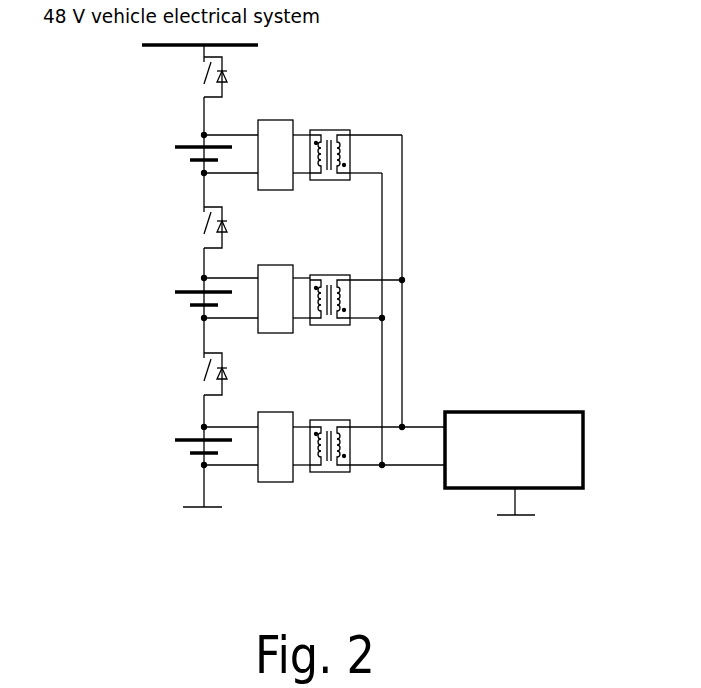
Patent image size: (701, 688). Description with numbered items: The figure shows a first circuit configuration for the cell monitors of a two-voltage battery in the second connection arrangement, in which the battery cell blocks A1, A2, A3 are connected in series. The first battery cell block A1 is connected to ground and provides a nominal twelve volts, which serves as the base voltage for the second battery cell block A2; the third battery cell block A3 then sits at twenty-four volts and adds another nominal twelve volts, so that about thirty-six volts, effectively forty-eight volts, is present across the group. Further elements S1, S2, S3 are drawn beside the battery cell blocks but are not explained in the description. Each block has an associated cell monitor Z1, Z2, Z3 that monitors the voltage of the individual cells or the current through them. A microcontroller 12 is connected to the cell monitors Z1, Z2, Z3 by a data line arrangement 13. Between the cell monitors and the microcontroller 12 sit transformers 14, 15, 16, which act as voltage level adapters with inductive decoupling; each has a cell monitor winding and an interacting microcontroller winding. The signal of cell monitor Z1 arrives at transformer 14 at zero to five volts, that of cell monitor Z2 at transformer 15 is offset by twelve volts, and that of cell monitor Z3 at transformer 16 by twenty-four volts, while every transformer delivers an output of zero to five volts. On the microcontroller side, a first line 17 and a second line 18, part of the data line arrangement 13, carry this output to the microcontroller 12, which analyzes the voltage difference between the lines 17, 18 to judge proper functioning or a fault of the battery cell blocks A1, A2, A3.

The microcontroller 12 is at (495, 470).
The data line arrangement 13 is at (428, 267).
The transformer 14 is at (329, 478).
The transformer 15 is at (335, 331).
The transformer 16 is at (341, 129).
The first line 17 is at (407, 468).
The second line 18 is at (417, 427).
The cell monitor Z1 is at (272, 458).
The cell monitor Z2 is at (273, 287).
The cell monitor Z3 is at (277, 138).
The switch S1 is at (197, 374).
The switch S2 is at (197, 227).
The switch S3 is at (197, 77).
The first battery cell block A1 is at (205, 455).
The second battery cell block A2 is at (205, 307).
The third battery cell block A3 is at (205, 163).